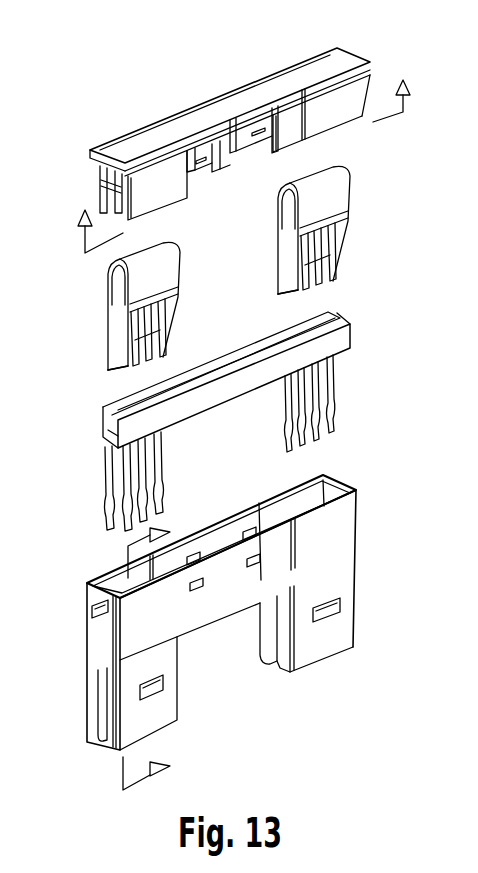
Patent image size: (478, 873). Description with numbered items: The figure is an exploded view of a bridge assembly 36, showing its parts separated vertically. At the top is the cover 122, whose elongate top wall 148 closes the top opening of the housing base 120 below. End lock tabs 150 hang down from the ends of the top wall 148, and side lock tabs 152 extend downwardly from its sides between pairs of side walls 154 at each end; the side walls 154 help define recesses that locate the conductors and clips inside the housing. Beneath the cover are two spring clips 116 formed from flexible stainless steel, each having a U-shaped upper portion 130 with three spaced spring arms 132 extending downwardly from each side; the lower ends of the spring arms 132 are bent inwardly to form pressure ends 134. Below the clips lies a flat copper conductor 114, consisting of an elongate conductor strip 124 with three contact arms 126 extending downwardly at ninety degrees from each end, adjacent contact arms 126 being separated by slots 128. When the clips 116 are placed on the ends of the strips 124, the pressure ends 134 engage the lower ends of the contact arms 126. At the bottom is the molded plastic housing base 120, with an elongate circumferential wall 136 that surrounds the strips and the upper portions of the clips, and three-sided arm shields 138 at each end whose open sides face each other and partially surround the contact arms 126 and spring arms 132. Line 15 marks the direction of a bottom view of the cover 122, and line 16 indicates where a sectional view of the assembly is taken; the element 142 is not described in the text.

The bridge assembly 36 is at (97, 80).
The line 15- 15 is at (235, 161).
The line 16- 16 is at (165, 651).
The conductor 114 is at (340, 308).
The spring clip 116 is at (283, 228).
The housing base 120 is at (362, 506).
The cover 122 is at (342, 62).
The conductor strip 124 is at (219, 385).
The contact arm 126 is at (330, 393).
The slot 128 is at (155, 462).
The U-shaped upper portion 130 is at (280, 193).
The spring arm 132 is at (302, 263).
The pressure end 134 is at (107, 370).
The circumferential wall 136 is at (84, 620).
The arm shield 138 is at (113, 693).
The latch slot 142 is at (102, 723).
The top wall 148 is at (236, 100).
The end lock tab 150 is at (106, 175).
The side lock tab 152 is at (198, 168).
The side wall 154 is at (342, 119).